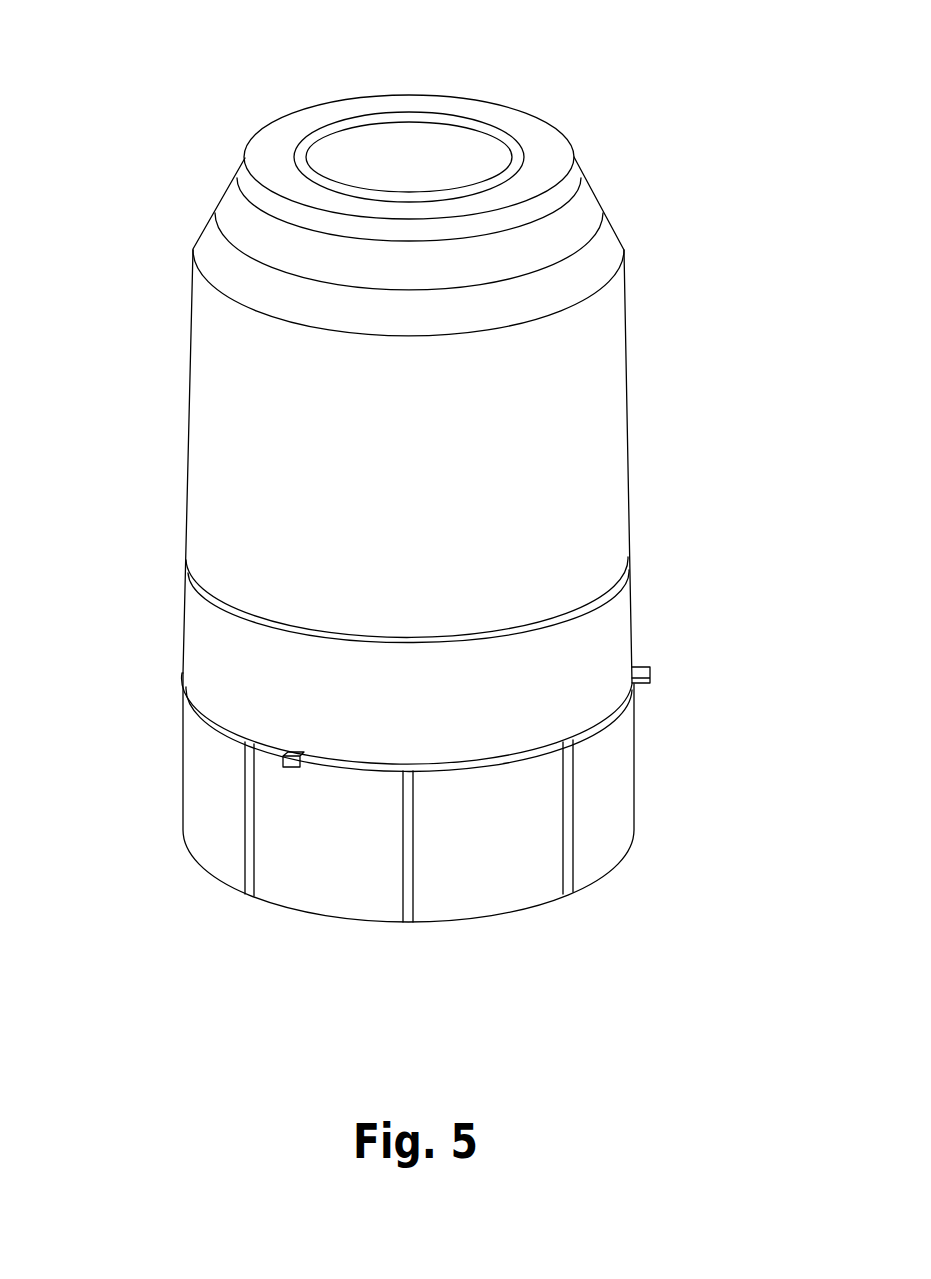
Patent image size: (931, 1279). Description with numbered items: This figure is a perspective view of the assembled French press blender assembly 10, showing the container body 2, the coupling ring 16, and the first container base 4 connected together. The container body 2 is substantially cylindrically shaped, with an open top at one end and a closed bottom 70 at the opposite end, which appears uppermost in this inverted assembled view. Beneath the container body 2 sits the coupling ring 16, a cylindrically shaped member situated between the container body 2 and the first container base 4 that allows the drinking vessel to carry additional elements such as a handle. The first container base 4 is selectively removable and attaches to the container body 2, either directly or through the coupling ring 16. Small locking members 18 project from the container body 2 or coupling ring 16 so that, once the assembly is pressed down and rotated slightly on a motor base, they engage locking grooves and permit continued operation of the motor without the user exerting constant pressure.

The French press blender assembly 10 is at (173, 117).
The closed bottom 70 is at (490, 128).
The container body 2 is at (625, 417).
The coupling ring 16 is at (631, 622).
The locking member 18 is at (285, 767).
The first container base 4 is at (657, 825).